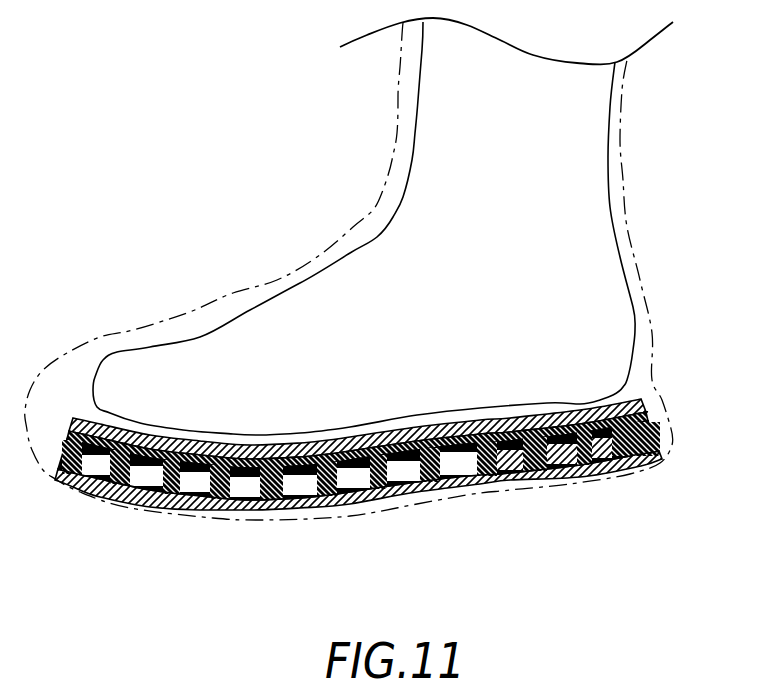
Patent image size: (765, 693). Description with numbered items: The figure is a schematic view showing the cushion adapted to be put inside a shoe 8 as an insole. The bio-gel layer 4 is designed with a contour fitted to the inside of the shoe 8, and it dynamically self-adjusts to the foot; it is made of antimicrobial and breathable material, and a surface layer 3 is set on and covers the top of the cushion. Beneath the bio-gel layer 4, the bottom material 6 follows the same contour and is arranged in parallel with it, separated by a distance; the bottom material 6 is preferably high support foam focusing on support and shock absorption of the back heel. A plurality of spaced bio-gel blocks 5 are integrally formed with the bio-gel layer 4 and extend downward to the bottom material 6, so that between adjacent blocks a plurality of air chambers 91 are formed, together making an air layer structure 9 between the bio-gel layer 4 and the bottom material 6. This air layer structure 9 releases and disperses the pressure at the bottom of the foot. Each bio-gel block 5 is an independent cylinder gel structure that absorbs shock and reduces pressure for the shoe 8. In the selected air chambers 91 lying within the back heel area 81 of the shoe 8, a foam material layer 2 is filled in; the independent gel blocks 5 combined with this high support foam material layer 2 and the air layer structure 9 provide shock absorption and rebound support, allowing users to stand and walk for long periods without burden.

The shoe 8 is at (623, 183).
The surface layer 3 is at (637, 400).
The bio-gel layer 4 is at (650, 412).
The air layer structure 9 is at (297, 488).
The air chambers 91 is at (450, 460).
The bottom material 6 is at (378, 497).
The bio-gel blocks 5 is at (534, 490).
The foam material layer 2 is at (608, 472).
The back heel area 81 is at (640, 567).